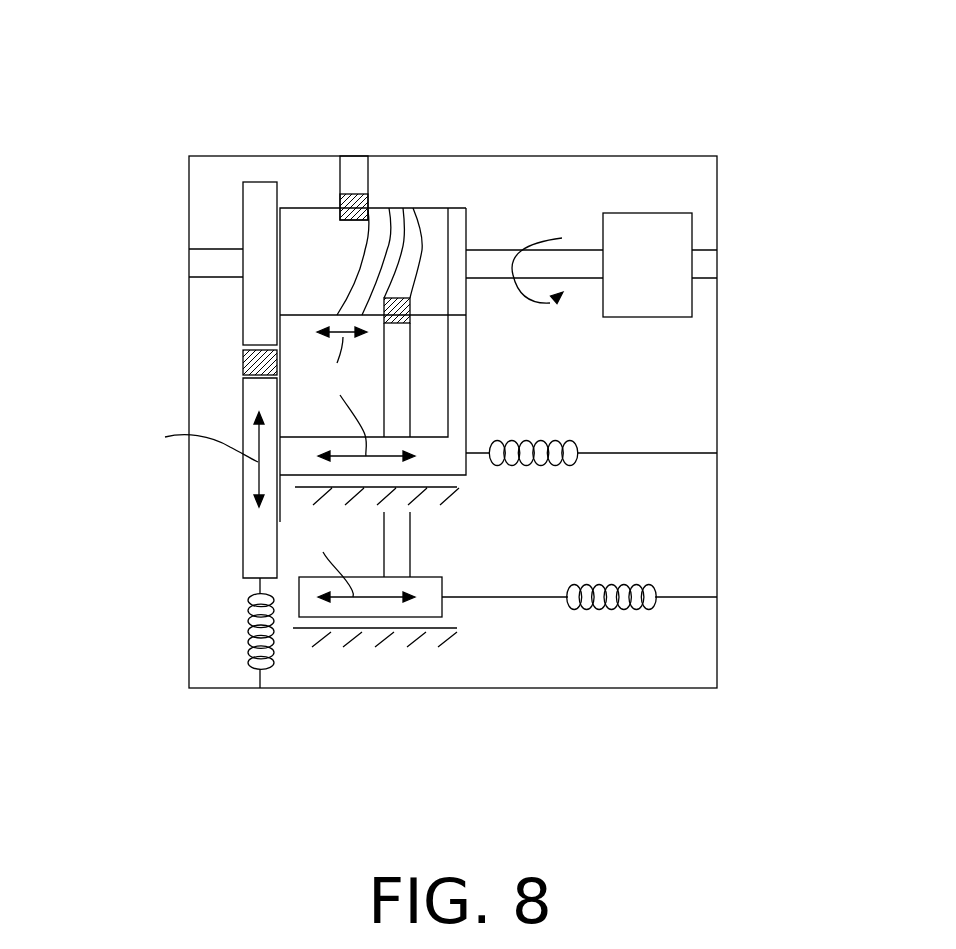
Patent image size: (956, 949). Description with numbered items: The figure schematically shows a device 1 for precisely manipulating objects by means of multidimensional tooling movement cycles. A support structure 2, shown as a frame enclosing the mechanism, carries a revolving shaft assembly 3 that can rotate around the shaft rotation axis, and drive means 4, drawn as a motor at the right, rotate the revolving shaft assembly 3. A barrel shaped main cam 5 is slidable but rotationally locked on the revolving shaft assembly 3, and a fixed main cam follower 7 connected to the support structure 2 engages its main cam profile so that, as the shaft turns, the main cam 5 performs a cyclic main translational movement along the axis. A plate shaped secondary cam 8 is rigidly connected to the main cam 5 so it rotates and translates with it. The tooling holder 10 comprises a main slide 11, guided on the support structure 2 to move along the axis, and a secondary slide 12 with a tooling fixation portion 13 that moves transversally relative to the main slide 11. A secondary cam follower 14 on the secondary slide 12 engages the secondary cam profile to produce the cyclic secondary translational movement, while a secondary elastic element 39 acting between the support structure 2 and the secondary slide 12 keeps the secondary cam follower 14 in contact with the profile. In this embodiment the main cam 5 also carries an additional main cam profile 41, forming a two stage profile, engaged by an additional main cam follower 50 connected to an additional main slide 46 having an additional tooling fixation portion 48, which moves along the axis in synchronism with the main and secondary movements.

The device 1 is at (688, 127).
The support structure 2 is at (717, 215).
The revolving shaft assembly 3 is at (573, 262).
The drive means 4 is at (650, 213).
The main cam 5 is at (310, 217).
The main cam follower 7 is at (370, 183).
The secondary cam 8 is at (262, 195).
The tooling holder 10 is at (222, 475).
The main slide 11 is at (455, 435).
The secondary slide 12 is at (243, 422).
The tooling fixation portion 13 is at (262, 545).
The secondary cam follower 14 is at (243, 362).
The secondary elastic element 39 is at (252, 626).
The additional main cam profile 41 is at (400, 220).
The additional main slide 46 is at (420, 575).
The additional tooling fixation portion 48 is at (295, 630).
The additional main cam follower 50 is at (415, 303).